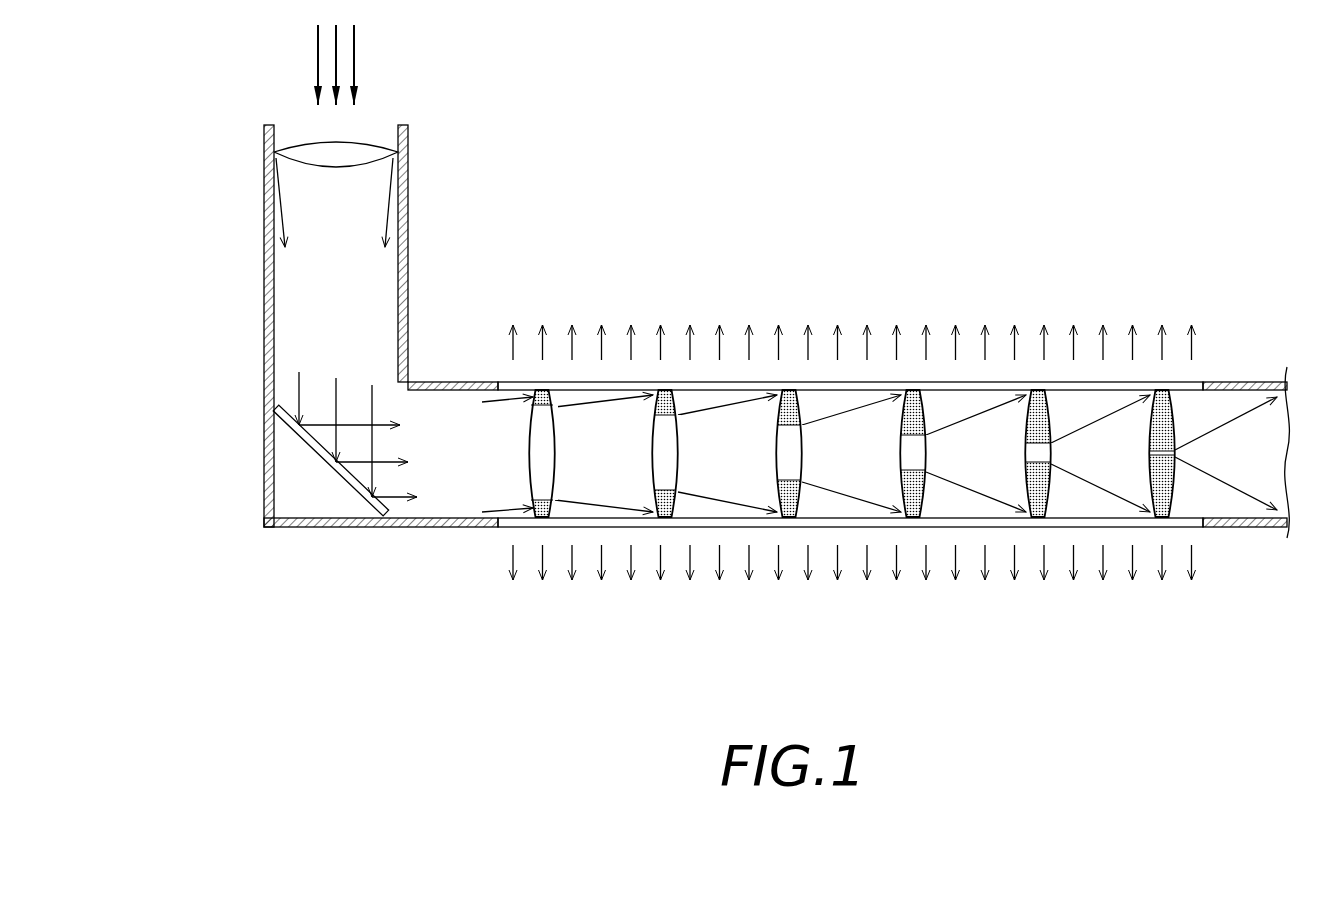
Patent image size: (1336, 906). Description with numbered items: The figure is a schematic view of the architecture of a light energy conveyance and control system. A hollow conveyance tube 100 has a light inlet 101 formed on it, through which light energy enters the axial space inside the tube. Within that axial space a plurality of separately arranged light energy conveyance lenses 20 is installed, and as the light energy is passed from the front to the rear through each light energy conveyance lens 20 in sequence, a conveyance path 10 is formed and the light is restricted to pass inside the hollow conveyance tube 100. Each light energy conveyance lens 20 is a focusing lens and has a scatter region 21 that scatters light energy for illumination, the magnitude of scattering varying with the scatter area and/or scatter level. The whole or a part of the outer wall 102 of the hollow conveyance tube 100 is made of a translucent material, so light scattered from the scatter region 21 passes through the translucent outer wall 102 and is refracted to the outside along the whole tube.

The hollow conveyance tube 100 is at (263, 323).
The light inlet 101 is at (397, 138).
The outer wall 102 is at (518, 382).
The conveyance path 10 is at (463, 488).
The light energy conveyance lens 20 is at (553, 437).
The scatter region 21 is at (552, 392).